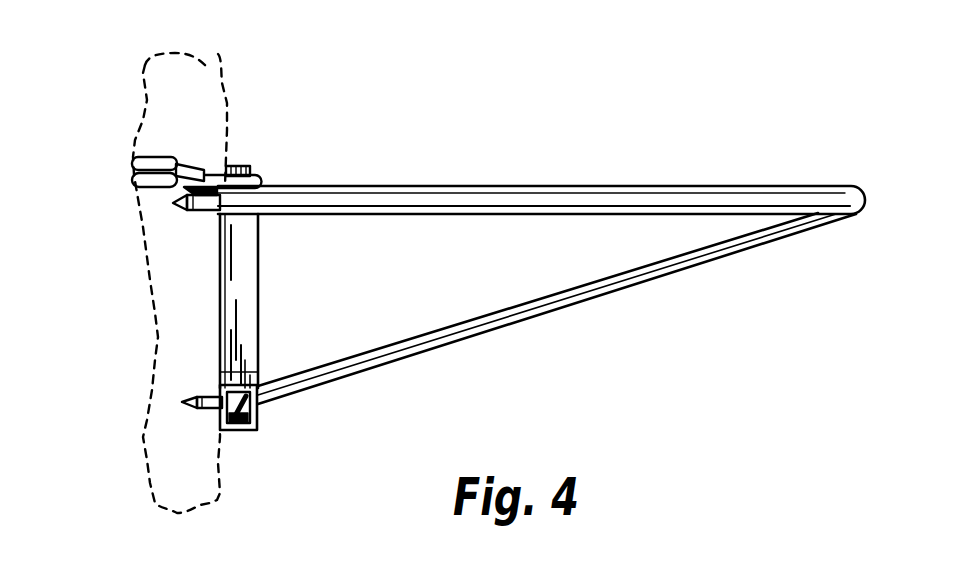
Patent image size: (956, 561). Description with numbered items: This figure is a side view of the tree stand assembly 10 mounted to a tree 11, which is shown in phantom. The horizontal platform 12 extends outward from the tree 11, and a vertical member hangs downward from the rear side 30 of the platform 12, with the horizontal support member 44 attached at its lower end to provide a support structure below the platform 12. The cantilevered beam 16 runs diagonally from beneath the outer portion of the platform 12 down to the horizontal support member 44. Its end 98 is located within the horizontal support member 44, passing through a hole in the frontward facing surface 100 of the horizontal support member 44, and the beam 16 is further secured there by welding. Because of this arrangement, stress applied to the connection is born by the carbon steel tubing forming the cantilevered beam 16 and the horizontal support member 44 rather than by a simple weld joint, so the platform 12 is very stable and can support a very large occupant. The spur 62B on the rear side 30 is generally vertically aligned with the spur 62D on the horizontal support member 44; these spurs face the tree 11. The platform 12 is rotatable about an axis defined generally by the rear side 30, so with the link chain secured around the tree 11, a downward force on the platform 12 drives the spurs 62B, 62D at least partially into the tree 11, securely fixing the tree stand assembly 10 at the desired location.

The tree stand assembly 10 is at (655, 359).
The tree 11 is at (147, 105).
The horizontal platform 12 is at (568, 186).
The cantilevered beam 16 is at (535, 318).
The rear side 30 is at (240, 200).
The horizontal support member 44 is at (262, 386).
The spur 62B is at (197, 203).
The spur 62D is at (183, 402).
The end of cantilevered beam 98 is at (223, 433).
The frontward facing surface 100 is at (260, 413).